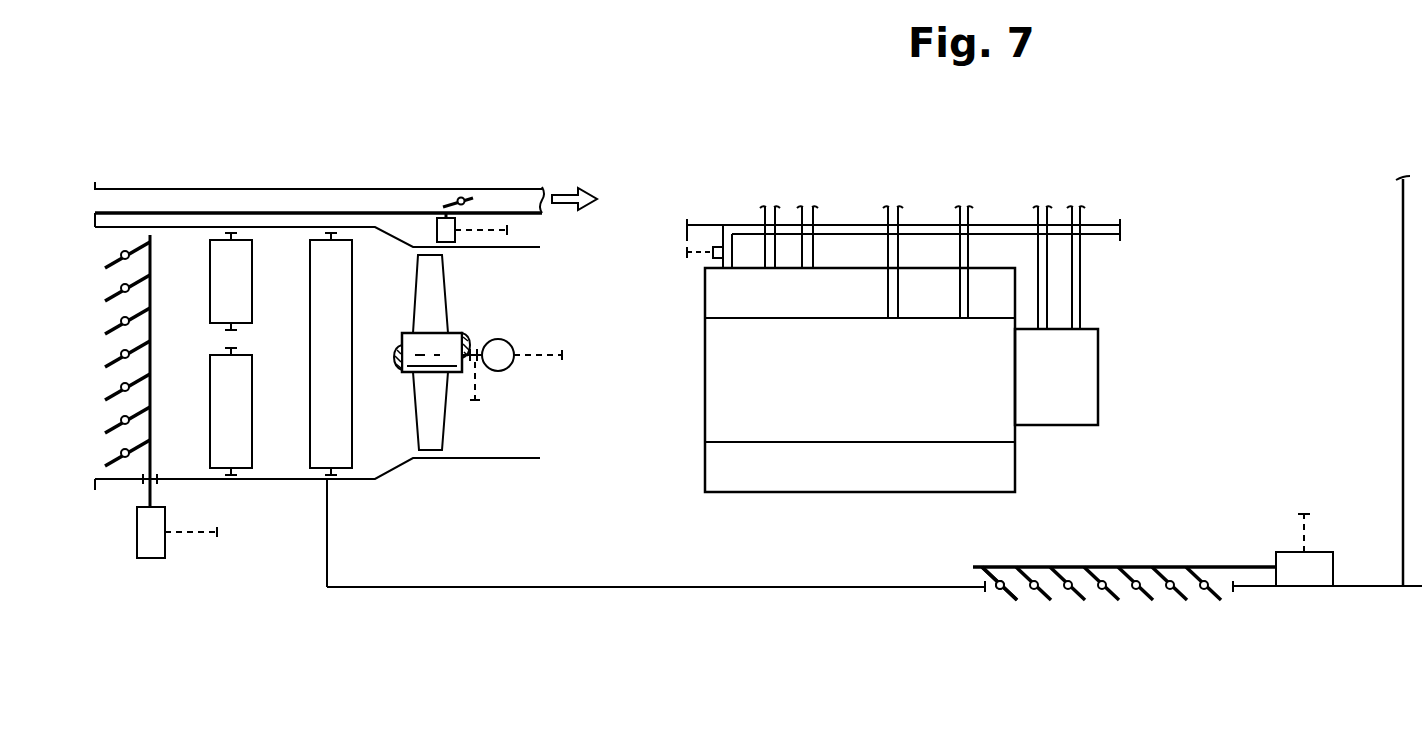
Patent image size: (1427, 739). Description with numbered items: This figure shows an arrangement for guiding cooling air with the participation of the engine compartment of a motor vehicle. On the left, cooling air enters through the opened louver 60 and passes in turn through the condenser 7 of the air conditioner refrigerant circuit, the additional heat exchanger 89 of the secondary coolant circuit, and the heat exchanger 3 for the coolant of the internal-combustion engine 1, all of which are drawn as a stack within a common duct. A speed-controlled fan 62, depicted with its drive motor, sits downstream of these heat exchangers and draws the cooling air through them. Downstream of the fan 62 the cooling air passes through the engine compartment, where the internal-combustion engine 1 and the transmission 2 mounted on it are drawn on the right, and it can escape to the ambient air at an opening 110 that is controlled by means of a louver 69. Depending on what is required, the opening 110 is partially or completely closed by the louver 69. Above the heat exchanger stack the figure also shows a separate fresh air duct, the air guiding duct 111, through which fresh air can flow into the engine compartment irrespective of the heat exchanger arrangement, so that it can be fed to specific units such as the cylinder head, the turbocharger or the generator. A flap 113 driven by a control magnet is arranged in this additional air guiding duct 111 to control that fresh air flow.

The internal-combustion engine 1 is at (1022, 459).
The transmission 2 is at (1082, 362).
The heat exchanger 3 is at (315, 337).
The condenser 7 is at (240, 418).
The louver 60 is at (122, 472).
The fan 62 is at (435, 343).
The louver 69 is at (1141, 558).
The additional heat exchanger 89 is at (237, 276).
The opening 110 is at (991, 596).
The air guiding duct 111 is at (294, 198).
The flap 113 is at (466, 197).